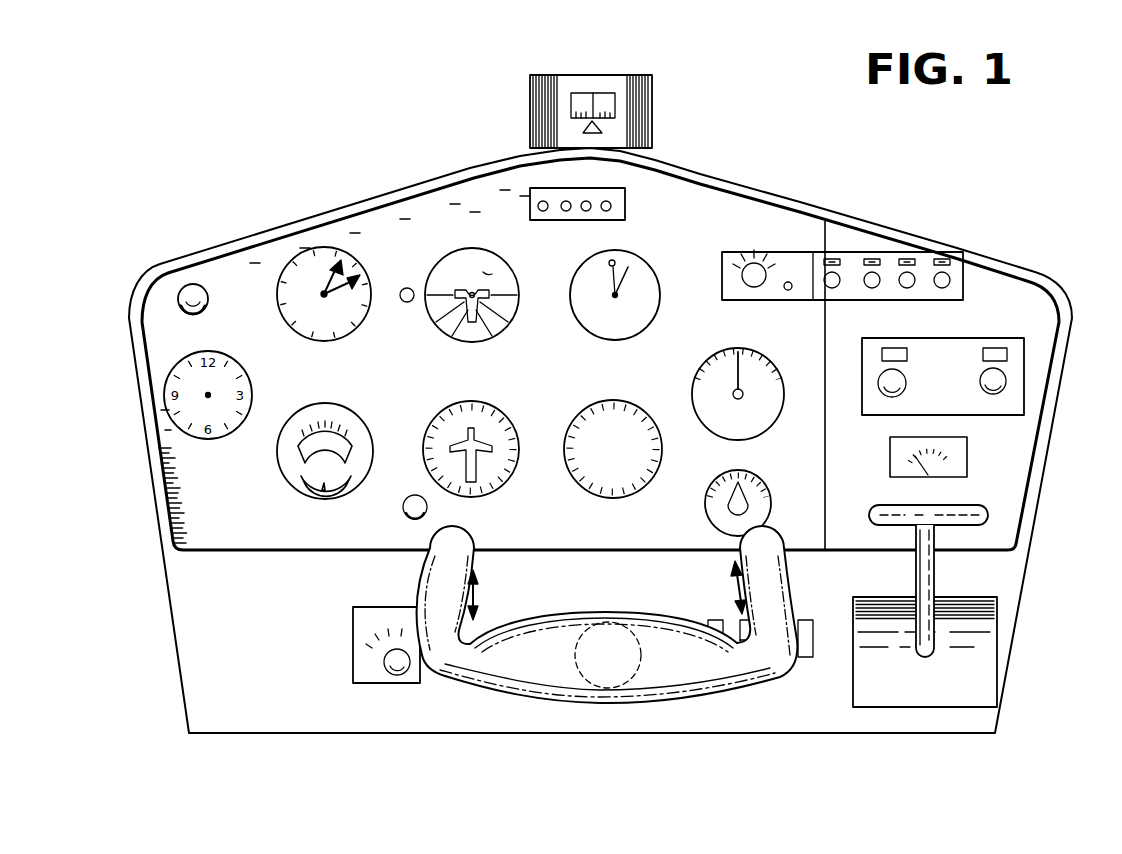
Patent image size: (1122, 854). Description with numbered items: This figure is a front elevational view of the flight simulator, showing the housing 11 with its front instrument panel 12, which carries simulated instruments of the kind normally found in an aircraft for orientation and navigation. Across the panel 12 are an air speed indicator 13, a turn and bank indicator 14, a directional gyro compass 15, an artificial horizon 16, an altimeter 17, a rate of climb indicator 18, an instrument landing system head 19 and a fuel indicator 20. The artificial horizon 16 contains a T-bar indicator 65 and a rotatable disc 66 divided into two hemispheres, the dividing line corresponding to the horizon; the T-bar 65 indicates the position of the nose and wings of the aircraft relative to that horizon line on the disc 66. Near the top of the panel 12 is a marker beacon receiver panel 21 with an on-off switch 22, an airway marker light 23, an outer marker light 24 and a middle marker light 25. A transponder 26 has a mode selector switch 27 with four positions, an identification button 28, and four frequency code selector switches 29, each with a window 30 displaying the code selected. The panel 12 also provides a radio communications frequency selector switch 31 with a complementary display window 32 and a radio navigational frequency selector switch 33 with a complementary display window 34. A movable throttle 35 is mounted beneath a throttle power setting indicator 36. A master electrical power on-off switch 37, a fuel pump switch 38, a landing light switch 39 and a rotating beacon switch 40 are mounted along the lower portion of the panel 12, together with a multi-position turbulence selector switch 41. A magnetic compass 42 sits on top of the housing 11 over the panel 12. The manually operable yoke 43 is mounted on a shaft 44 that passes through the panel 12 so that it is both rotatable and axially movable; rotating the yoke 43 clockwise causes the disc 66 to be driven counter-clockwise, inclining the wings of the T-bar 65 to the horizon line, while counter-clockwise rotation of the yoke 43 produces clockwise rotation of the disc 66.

The housing 11 is at (735, 177).
The front instrument panel 12 is at (686, 217).
The air speed indicator 13 is at (318, 258).
The turn and bank indicator 14 is at (366, 406).
The directional gyro compass 15 is at (510, 485).
The artificial horizon 16 is at (487, 288).
The altimeter 17 is at (648, 264).
The rate of climb indicator 18 is at (642, 488).
The instrument landing system head 19 is at (762, 386).
The fuel indicator 20 is at (755, 486).
The marker beacon receiver panel 21 is at (598, 195).
The on-off switch 22 is at (530, 207).
The airway marker light 23 is at (566, 212).
The outer marker light 24 is at (588, 201).
The middle marker light 25 is at (612, 207).
The transponder 26 is at (861, 253).
The mode selector switch 27 is at (755, 262).
The identification button 28 is at (787, 290).
The frequency code selector switch 29 is at (833, 288).
The window 30 is at (834, 258).
The radio communications frequency selector switch 31 is at (882, 388).
The display window 32 is at (907, 355).
The radio navigational frequency selector switch 33 is at (1006, 383).
The display window 34 is at (997, 340).
The movable throttle 35 is at (988, 518).
The throttle power setting indicator 36 is at (967, 454).
The master electrical power on-off switch 37 is at (712, 622).
The fuel pump switch 38 is at (738, 674).
The landing light switch 39 is at (775, 670).
The rotating beacon switch 40 is at (805, 658).
The multi-position turbulence selector switch 41 is at (383, 678).
The magnetic compass 42 is at (653, 94).
The yoke 43 is at (607, 654).
The shaft 44 is at (600, 690).
The T-bar indicator 65 is at (490, 333).
The rotatable disc 66 is at (490, 278).